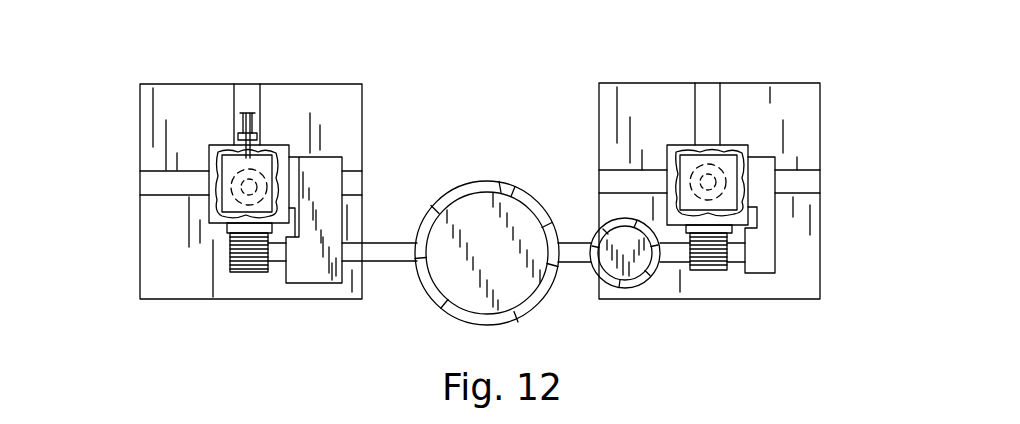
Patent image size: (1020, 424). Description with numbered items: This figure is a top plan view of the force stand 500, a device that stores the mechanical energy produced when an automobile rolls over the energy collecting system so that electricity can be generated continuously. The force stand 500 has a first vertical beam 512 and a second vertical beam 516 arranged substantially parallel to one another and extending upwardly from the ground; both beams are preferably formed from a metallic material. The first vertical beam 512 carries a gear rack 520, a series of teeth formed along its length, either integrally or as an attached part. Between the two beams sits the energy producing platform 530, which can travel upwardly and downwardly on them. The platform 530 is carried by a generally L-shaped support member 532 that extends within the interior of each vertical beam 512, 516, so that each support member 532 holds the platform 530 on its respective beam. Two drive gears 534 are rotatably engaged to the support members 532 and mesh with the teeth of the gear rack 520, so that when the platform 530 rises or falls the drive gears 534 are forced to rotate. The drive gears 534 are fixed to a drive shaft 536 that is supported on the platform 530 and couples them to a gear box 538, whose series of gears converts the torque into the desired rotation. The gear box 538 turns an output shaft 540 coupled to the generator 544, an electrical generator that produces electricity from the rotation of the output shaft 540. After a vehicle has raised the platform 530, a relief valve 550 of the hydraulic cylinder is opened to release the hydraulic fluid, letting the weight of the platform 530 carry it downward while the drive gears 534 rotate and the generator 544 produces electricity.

The force stand 500 is at (515, 55).
The first vertical beam 512 is at (196, 210).
The second vertical beam 516 is at (760, 138).
The gear rack 520 is at (225, 230).
The energy producing platform 530 is at (500, 170).
The L-shaped support member 532 is at (362, 207).
The drive gear 534 is at (247, 272).
The drive shaft 536 is at (673, 263).
The gear box 538 is at (629, 296).
The output shaft 540 is at (568, 240).
The generator 544 is at (503, 321).
The relief valve 550 is at (258, 133).